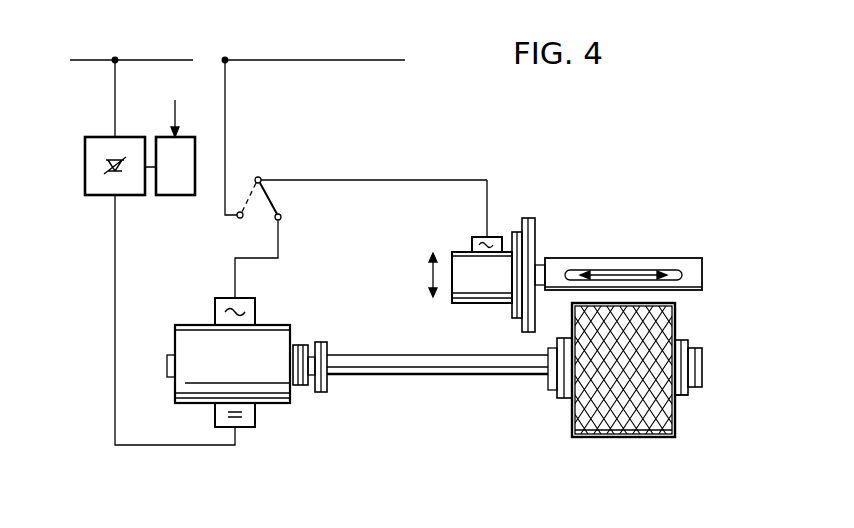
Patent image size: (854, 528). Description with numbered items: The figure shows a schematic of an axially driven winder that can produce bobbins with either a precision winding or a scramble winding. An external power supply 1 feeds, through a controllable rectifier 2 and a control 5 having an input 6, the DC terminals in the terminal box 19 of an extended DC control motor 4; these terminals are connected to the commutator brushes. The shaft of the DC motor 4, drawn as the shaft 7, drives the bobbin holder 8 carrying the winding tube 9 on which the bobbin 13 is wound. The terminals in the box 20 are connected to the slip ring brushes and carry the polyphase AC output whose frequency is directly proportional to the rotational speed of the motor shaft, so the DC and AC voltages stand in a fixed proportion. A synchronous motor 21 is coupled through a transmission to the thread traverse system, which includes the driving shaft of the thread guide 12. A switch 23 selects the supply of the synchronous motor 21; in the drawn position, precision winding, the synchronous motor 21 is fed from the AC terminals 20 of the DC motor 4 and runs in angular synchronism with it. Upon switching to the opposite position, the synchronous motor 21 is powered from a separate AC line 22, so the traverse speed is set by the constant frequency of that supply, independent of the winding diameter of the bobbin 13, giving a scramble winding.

The external power supply 1 is at (183, 62).
The controllable rectifier 2 is at (95, 135).
The extended DC control motor 4 is at (175, 392).
The control 5 is at (175, 197).
The input 6 is at (183, 118).
The shaft 7 is at (422, 378).
The bobbin holder 8 is at (695, 343).
The winding tube 9 is at (680, 397).
The thread guide 12 is at (620, 268).
The bobbin 13 is at (615, 438).
The terminal box 19 is at (215, 420).
The box 20 is at (215, 312).
The synchronous motor 21 is at (470, 305).
The separate AC line 22 is at (325, 62).
The switch 23 is at (264, 197).